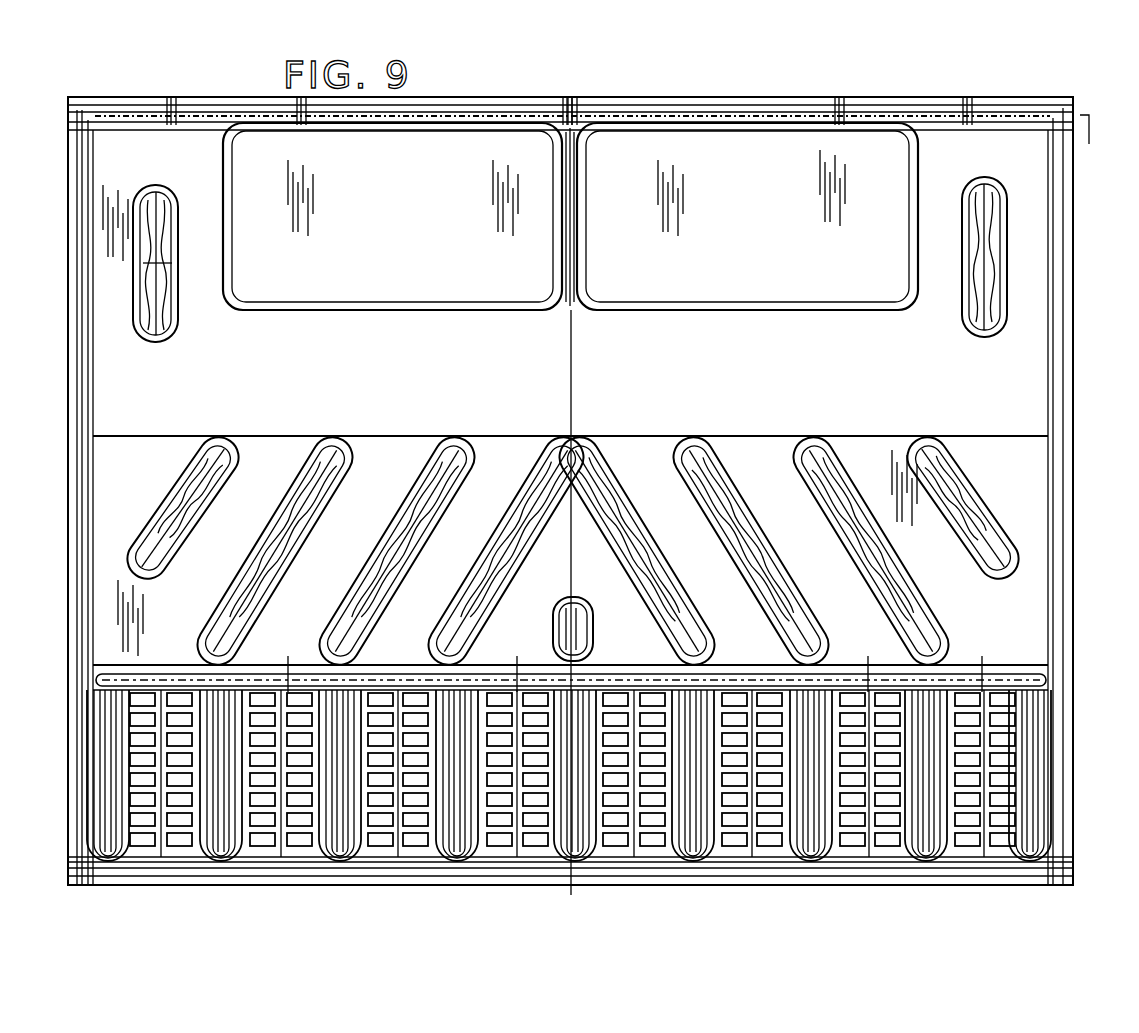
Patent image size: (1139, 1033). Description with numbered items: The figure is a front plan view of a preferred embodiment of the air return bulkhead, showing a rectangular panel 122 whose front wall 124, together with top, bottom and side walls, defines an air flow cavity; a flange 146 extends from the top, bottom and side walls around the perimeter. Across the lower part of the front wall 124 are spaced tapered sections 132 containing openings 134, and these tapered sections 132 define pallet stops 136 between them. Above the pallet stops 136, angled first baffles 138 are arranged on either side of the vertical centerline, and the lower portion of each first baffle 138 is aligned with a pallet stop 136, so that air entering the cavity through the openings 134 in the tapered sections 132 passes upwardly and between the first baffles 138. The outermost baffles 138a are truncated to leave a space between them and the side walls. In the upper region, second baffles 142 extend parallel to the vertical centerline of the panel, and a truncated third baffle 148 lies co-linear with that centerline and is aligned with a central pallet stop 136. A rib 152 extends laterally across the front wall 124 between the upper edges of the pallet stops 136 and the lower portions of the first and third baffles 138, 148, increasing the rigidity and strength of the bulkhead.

The rectangular panel 122 is at (748, 95).
The front wall 124 is at (752, 370).
The tapered sections 132 is at (672, 852).
The openings 134 is at (650, 842).
The pallet stops 136 is at (217, 867).
The first baffles 138 is at (285, 568).
The outermost baffles 138a is at (166, 496).
The second baffles 142 is at (163, 283).
The flange 146 is at (612, 102).
The third baffle 148 is at (596, 636).
The rib 152 is at (954, 674).